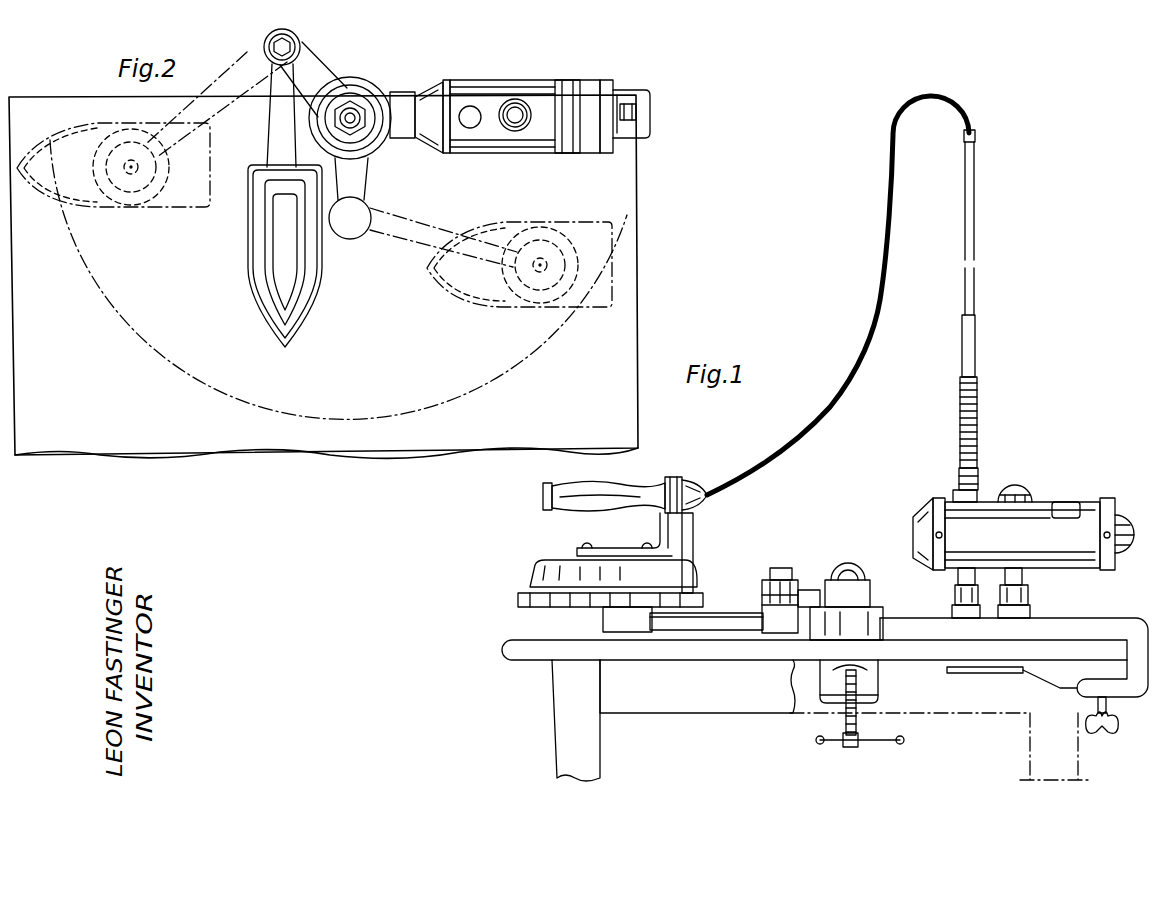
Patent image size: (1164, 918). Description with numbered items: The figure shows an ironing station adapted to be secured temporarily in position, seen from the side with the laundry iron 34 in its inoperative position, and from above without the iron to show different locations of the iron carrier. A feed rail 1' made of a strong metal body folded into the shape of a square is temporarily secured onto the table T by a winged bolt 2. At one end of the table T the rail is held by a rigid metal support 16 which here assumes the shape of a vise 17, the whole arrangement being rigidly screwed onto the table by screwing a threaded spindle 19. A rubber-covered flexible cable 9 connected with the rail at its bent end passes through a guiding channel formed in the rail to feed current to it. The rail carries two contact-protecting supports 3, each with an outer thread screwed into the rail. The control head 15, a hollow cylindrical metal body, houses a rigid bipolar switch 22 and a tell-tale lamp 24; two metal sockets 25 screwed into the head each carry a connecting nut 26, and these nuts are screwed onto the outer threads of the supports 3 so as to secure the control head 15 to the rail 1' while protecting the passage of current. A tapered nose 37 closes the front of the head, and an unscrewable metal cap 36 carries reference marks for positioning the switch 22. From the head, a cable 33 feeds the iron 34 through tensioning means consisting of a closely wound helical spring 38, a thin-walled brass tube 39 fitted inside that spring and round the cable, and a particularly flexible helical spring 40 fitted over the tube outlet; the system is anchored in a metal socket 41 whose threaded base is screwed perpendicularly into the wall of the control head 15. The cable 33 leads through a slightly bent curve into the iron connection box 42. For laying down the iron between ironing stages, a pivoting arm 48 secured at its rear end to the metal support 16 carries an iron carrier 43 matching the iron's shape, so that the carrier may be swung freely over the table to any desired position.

In FIG. 2, the feed rail 1' is at (638, 139).
In FIG. 1, the feed rail 1' is at (1018, 637).
In FIG. 1, the winged bolt 2 is at (1116, 723).
In FIG. 1, the contact-protecting support 3 is at (962, 616).
In FIG. 1, the cable 9 is at (997, 672).
In FIG. 2, the control head 15 is at (520, 138).
In FIG. 1, the control head 15 is at (988, 530).
In FIG. 2, the metal support 16 is at (373, 92).
In FIG. 1, the metal support 16 is at (870, 630).
In FIG. 1, the vise 17 is at (868, 692).
In FIG. 1, the threaded spindle 19 is at (840, 723).
In FIG. 2, the bipolar switch 22 is at (630, 105).
In FIG. 1, the bipolar switch 22 is at (1128, 518).
In FIG. 2, the tell-tale lamp 24 is at (518, 107).
In FIG. 1, the tell-tale lamp 24 is at (1022, 486).
In FIG. 1, the metal socket 25 is at (1013, 580).
In FIG. 1, the connecting nut 26 is at (1018, 595).
In FIG. 1, the cable 33 is at (862, 340).
In FIG. 1, the laundry iron 34 is at (677, 578).
In FIG. 2, the metal cap 36 is at (567, 116).
In FIG. 1, the metal cap 36 is at (1106, 500).
In FIG. 1, the nose cone 37 is at (912, 528).
In FIG. 1, the helical spring 38 is at (960, 425).
In FIG. 1, the brass tube 39 is at (975, 340).
In FIG. 1, the helical spring 40 is at (975, 126).
In FIG. 1, the metal socket 41 is at (966, 480).
In FIG. 1, the iron connection box 42 is at (692, 492).
In FIG. 2, the iron carrier 43 is at (287, 285).
In FIG. 1, the iron carrier 43 is at (558, 597).
In FIG. 2, the pivoting arm 48 is at (320, 90).
In FIG. 1, the pivoting arm 48 is at (730, 623).
In FIG. 1, the table T is at (708, 652).